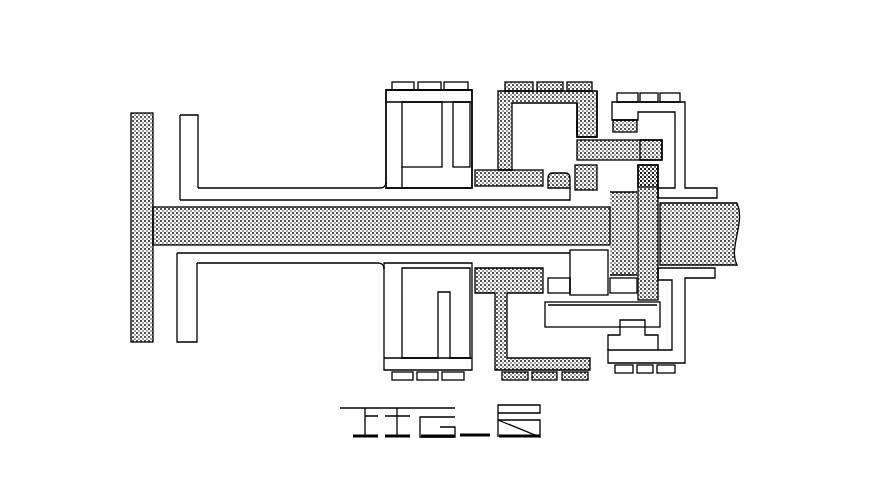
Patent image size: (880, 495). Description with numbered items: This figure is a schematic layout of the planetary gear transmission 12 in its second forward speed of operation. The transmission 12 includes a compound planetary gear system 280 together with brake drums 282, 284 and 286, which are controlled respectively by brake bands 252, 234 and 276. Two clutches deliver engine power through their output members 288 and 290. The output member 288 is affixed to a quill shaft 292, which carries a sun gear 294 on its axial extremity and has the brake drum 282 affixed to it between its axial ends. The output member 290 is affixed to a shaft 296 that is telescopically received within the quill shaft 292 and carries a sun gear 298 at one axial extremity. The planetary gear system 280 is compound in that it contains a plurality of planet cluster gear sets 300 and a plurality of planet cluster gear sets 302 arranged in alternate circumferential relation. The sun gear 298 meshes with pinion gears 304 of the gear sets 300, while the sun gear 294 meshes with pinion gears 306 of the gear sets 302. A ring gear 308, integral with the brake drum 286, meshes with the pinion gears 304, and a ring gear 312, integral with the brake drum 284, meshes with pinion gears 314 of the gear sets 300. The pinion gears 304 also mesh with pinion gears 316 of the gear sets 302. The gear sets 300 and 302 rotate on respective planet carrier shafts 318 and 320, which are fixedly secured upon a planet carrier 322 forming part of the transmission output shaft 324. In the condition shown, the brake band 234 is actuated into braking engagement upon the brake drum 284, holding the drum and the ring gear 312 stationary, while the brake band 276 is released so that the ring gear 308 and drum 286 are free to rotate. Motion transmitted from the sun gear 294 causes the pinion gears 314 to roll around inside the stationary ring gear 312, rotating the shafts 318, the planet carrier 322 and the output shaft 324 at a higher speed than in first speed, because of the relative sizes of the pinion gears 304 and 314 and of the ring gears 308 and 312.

The transmission 12 is at (373, 142).
The brake band 252 is at (428, 85).
The brake band 276 is at (654, 96).
The compound planetary gear system 280 is at (593, 266).
The brake drum 282 is at (425, 97).
The brake drum 284 is at (500, 95).
The brake drum 286 is at (682, 108).
The output member 288 is at (190, 157).
The output member 290 is at (152, 118).
The quill shaft 292 is at (273, 199).
The sun gear 294 is at (556, 173).
The shaft 296 is at (302, 236).
The sun gear 298 is at (631, 190).
The planet cluster gear sets 300 is at (576, 129).
The planet cluster gear sets 302 is at (547, 310).
The pinion gears 304 is at (660, 175).
The pinion gears 306 is at (560, 330).
The ring gear 308 is at (621, 358).
The ring gear 312 is at (595, 93).
The pinion gears 314 is at (585, 127).
The pinion gears 316 is at (660, 298).
The planet carrier shafts 318 is at (655, 151).
The planet carrier shafts 320 is at (648, 317).
The planet carrier 322 is at (657, 131).
The output shaft 324 is at (733, 206).
The brake band 234 is at (548, 86).